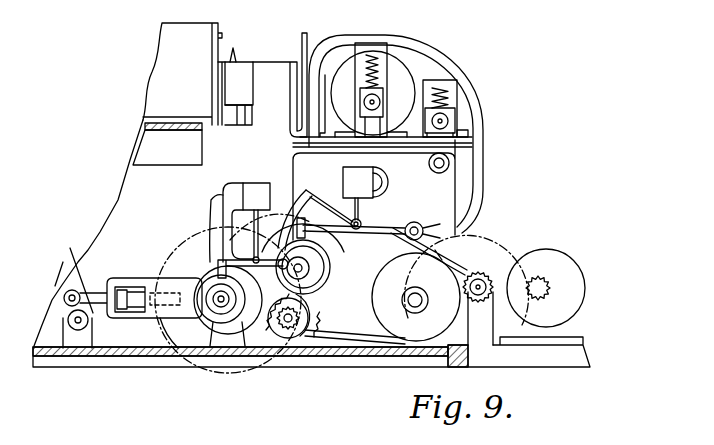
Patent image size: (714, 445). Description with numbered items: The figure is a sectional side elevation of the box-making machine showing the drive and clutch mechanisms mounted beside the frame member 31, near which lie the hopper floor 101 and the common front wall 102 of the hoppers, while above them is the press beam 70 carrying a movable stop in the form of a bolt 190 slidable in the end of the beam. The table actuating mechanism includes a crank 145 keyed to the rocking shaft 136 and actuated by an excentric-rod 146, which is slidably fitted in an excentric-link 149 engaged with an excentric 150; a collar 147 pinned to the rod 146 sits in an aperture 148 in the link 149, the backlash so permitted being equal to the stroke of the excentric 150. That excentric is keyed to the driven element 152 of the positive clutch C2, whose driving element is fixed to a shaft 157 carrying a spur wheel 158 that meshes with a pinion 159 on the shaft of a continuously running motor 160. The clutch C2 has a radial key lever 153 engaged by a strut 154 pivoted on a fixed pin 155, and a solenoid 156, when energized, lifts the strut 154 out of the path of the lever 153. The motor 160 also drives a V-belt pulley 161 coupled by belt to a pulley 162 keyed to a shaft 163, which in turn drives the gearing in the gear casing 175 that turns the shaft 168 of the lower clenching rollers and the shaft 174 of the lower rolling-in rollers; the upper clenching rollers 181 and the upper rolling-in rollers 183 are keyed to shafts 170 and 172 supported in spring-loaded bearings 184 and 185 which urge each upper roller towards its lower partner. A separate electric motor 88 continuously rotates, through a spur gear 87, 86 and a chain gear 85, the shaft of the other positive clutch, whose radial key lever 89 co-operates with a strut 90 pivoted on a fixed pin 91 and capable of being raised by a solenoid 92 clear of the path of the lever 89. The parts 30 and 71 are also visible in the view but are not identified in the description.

The base plate 30 is at (498, 360).
The frame member 31 is at (124, 178).
The press beam 70 is at (228, 62).
The support bar 71 is at (302, 40).
The chain gear 85 is at (488, 277).
The spur gear 86 is at (496, 246).
The spur gear 87 is at (545, 281).
The electric motor 88 is at (549, 250).
The radial key lever 89 is at (349, 221).
The strut 90 is at (390, 233).
The fixed pin 91 is at (420, 226).
The solenoid 92 is at (372, 173).
The common floor 101 is at (177, 131).
The common front wall 102 is at (163, 25).
The rocking shaft 136 is at (67, 318).
The crank 145 is at (63, 294).
The excentric-rod 146 is at (72, 293).
The collar 147 is at (121, 287).
The aperture 148 is at (140, 282).
The excentric-link 149 is at (166, 270).
The excentric 150 is at (286, 331).
The driven element 152 is at (238, 323).
The radial key lever 153 is at (212, 271).
The strut 154 is at (292, 230).
The fixed pin 155 is at (323, 259).
The solenoid 156 is at (258, 184).
The shaft 157 is at (212, 322).
The spur wheel 158 is at (212, 216).
The pinion 159 is at (299, 337).
The motor 160 is at (348, 350).
The V-belt pulley 161 is at (318, 288).
The pulley 162 is at (416, 297).
The shaft 163 is at (418, 309).
The shaft 168 is at (449, 163).
The shaft 170 is at (456, 114).
The shaft 172 is at (392, 88).
The shaft 174 is at (388, 183).
The gear casing 175 is at (480, 193).
The upper clenching rollers 181 is at (462, 123).
The upper rolling-in rollers 183 is at (357, 60).
The spring-loaded bearing 184 is at (449, 108).
The spring-loaded bearing 185 is at (376, 100).
The bolt 190 is at (244, 126).
The positive clutch C2 is at (222, 312).